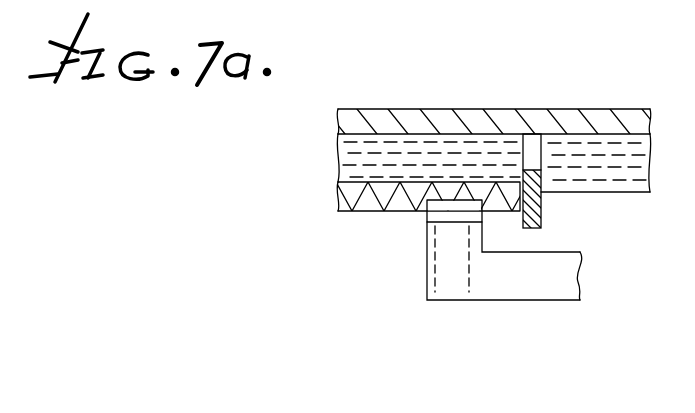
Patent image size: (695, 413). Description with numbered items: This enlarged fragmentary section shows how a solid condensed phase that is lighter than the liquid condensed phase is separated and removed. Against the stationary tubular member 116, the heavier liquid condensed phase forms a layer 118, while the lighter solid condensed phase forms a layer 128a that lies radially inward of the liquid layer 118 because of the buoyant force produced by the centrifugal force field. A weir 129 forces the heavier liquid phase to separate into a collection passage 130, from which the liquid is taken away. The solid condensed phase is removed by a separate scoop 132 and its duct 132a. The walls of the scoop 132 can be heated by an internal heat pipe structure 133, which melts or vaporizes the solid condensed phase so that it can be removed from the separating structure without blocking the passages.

The stationary tubular member 116 is at (468, 109).
The collection passage 130 is at (609, 157).
The condensed phase layer 118 is at (362, 165).
The solid condensed phase layer 128a is at (355, 203).
The weir 129 is at (542, 202).
The scoop 132 is at (452, 228).
The duct 132a is at (560, 287).
The internal heat pipe structure 133 is at (418, 280).